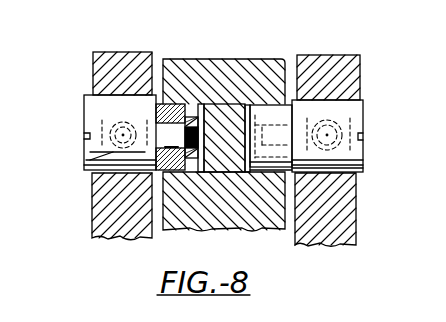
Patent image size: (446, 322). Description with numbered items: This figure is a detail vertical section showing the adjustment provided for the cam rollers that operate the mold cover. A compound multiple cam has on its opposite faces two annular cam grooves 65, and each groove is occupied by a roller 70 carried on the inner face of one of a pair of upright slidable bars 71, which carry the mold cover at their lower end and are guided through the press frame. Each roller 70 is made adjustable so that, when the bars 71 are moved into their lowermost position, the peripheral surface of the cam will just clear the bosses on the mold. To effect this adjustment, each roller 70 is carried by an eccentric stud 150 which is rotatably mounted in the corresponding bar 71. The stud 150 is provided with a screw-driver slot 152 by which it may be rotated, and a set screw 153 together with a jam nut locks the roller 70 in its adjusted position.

The annular cam groove 65 is at (201, 106).
The cam roller 70 is at (176, 112).
The upright slidable bar 71 is at (100, 212).
The eccentric stud 150 is at (84, 108).
The screw-driver slot 152 is at (88, 135).
The set screw 153 is at (84, 165).